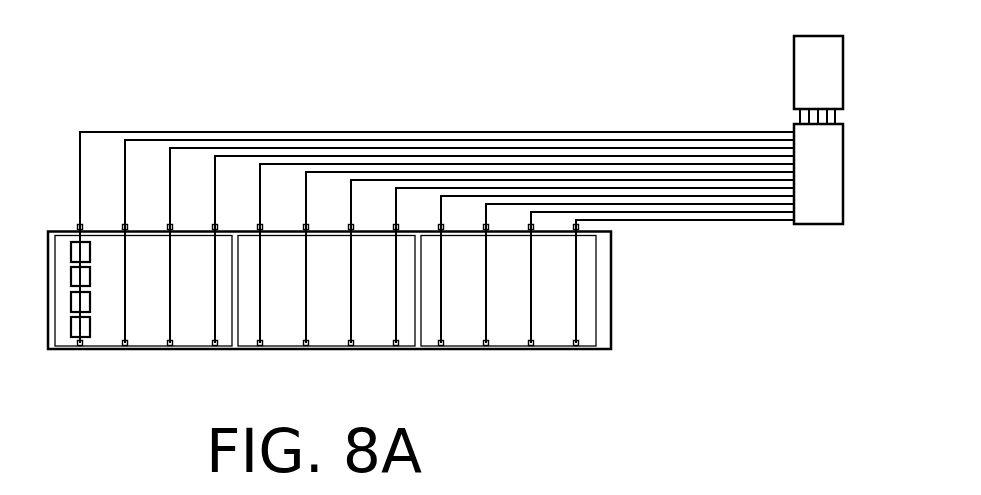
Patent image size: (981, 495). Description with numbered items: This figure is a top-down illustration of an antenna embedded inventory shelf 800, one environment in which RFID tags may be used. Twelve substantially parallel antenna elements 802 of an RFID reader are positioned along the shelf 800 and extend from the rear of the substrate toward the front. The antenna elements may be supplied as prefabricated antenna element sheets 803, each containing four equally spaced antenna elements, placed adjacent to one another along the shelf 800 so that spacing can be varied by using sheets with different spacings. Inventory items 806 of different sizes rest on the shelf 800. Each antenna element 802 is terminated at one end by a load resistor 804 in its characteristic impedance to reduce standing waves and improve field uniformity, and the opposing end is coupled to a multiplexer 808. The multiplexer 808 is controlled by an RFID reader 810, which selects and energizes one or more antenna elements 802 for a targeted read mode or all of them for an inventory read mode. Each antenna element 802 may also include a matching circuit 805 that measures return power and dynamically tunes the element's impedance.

The antenna embedded inventory shelf 800 is at (612, 340).
The antenna element 802 is at (442, 327).
The antenna element sheet 803 is at (147, 332).
The load resistor 804 is at (531, 343).
The matching circuit 805 is at (124, 227).
The inventory items 806 is at (70, 252).
The multiplexer 808 is at (818, 224).
The RFID reader 810 is at (794, 72).